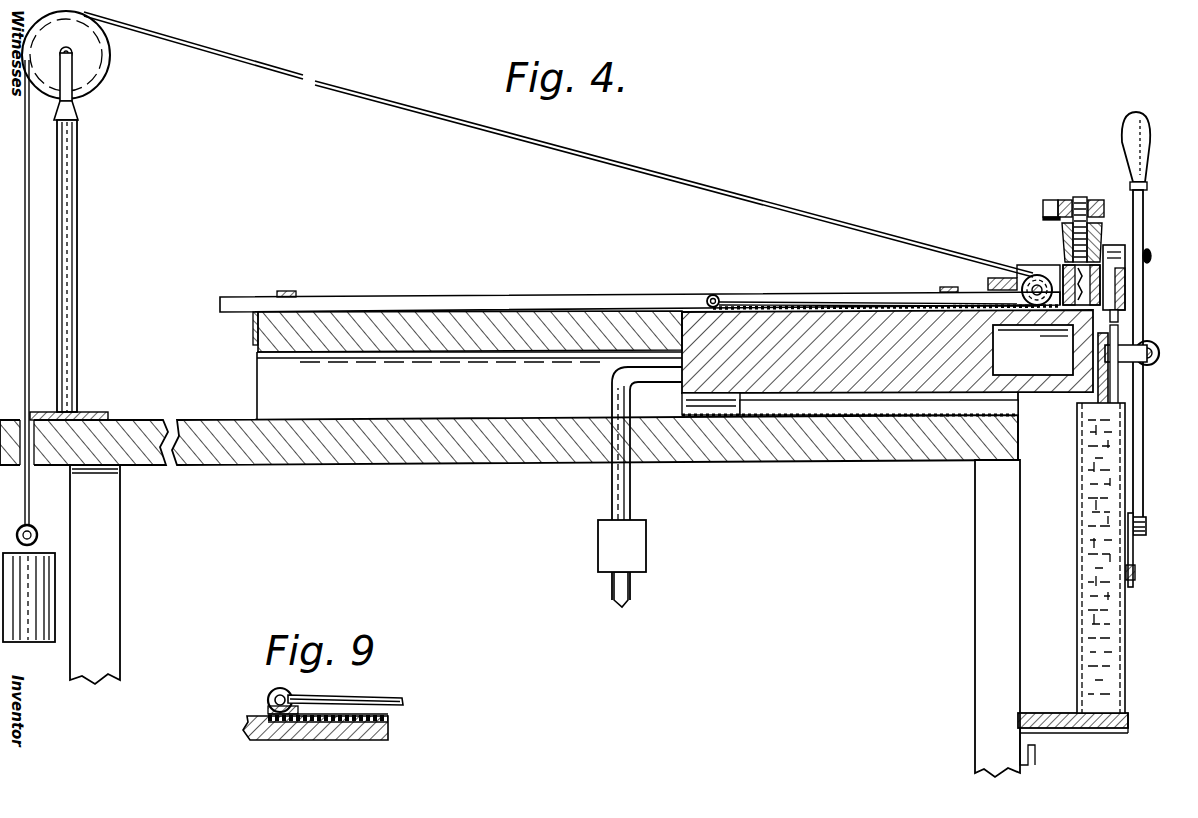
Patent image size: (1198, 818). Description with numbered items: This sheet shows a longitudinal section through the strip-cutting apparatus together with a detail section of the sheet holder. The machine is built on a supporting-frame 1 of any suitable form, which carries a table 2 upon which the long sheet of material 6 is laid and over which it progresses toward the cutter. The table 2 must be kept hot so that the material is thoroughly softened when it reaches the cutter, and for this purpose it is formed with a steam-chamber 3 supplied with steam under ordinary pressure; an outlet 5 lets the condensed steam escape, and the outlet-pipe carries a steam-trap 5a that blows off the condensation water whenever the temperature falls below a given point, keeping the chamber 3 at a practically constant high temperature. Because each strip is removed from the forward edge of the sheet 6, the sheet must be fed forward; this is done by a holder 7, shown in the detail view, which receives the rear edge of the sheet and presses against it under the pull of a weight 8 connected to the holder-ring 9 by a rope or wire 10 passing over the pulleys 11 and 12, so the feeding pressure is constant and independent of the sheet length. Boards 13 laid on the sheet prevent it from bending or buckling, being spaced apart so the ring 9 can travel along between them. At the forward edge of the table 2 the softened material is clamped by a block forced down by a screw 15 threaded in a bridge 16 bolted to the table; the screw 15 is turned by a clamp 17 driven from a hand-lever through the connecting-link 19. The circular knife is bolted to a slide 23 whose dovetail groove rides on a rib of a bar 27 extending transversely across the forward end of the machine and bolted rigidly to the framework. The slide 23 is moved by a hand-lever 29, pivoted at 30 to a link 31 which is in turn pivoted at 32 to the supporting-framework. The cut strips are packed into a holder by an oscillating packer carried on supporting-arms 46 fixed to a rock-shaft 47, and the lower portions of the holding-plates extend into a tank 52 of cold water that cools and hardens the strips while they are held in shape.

In FIG. 4, the supporting-frame 1 is at (905, 458).
In FIG. 4, the table 2 is at (785, 311).
In FIG. 4, the steam-chamber 3 is at (1033, 350).
In FIG. 4, the outlet 5 is at (632, 494).
In FIG. 4, the steam-trap 5a is at (648, 540).
In FIG. 4, the sheet of material 6 is at (855, 308).
In FIG. 9, the sheet of material 6 is at (378, 714).
In FIG. 9, the holder 7 is at (259, 728).
In FIG. 4, the weight 8 is at (38, 553).
In FIG. 4, the holder-ring 9 is at (718, 296).
In FIG. 9, the holder-ring 9 is at (268, 699).
In FIG. 4, the rope or wire 10 is at (380, 106).
In FIG. 9, the rope or wire 10 is at (360, 697).
In FIG. 4, the pulley 11 is at (109, 58).
In FIG. 4, the pulley 12 is at (990, 271).
In FIG. 4, the board 13 is at (572, 295).
In FIG. 4, the screw 15 is at (1080, 199).
In FIG. 4, the bridge 16 is at (1062, 239).
In FIG. 4, the clamp 17 is at (1064, 199).
In FIG. 4, the connecting-link 19 is at (1046, 208).
In FIG. 4, the slide 23 is at (1110, 246).
In FIG. 4, the bar 27 is at (1126, 295).
In FIG. 4, the hand-lever 29 is at (1148, 218).
In FIG. 4, the pivot 30 is at (1147, 523).
In FIG. 4, the link 31 is at (1135, 553).
In FIG. 4, the pivot 32 is at (1137, 573).
In FIG. 4, the supporting-arm 46 is at (1140, 362).
In FIG. 4, the rock-shaft 47 is at (1156, 347).
In FIG. 4, the tank 52 is at (1105, 632).